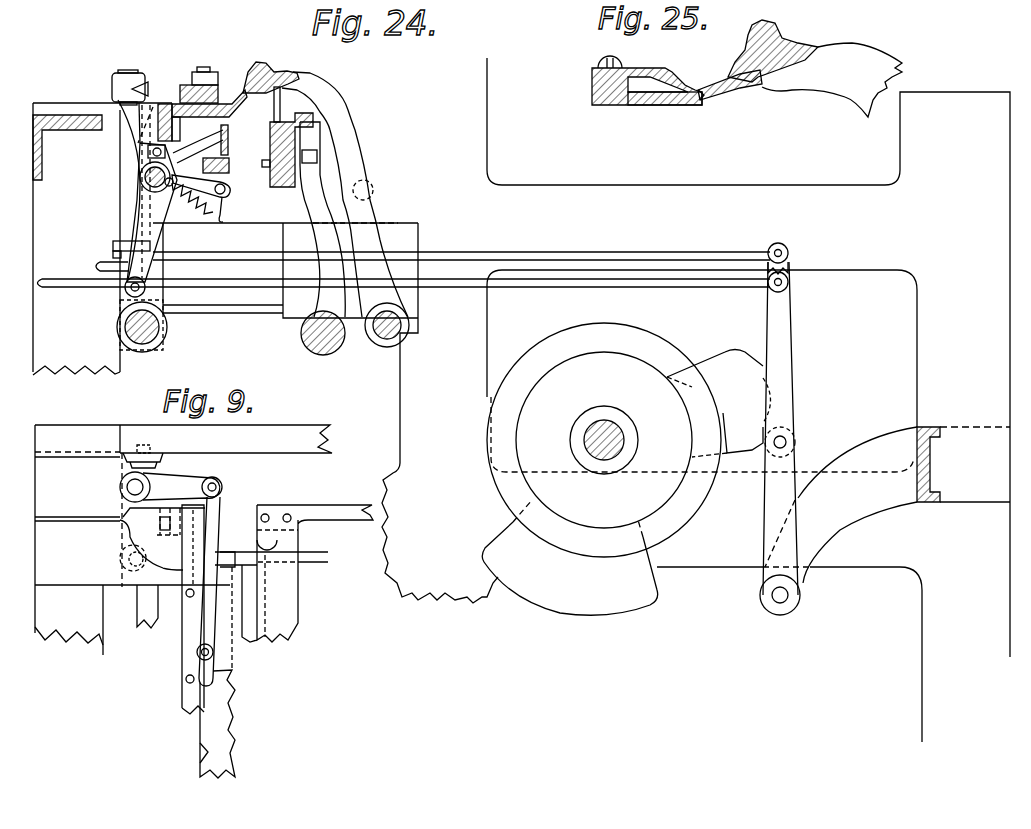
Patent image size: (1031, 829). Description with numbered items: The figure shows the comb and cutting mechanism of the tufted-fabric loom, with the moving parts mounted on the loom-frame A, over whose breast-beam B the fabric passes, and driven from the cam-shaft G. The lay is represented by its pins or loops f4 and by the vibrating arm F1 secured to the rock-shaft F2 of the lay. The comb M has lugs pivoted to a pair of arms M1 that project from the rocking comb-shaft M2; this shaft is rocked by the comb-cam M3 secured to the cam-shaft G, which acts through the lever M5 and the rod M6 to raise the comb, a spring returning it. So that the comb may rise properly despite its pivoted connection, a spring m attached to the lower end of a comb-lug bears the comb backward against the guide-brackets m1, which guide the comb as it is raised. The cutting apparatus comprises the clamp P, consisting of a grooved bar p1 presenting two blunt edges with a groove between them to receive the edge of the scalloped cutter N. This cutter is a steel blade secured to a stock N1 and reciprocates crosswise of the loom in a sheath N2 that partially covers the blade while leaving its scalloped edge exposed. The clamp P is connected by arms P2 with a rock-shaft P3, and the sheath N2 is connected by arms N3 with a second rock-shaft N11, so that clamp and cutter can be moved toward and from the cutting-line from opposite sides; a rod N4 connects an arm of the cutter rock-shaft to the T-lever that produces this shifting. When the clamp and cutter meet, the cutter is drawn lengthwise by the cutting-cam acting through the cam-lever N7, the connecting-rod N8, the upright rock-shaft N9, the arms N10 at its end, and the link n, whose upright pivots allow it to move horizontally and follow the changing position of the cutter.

In FIG. 24, the loom-frame A is at (581, 400).
In FIG. 24, the breast-beam B is at (34, 150).
In FIG. 9, the breast-beam B is at (183, 540).
In FIG. 24, the cam-shaft G is at (622, 441).
In FIG. 24, the comb M is at (230, 143).
In FIG. 24, the arms M1 is at (178, 192).
In FIG. 24, the rocking comb-shaft M2 is at (119, 184).
In FIG. 24, the comb-cam M3 is at (540, 587).
In FIG. 24, the lever M5 is at (786, 376).
In FIG. 24, the rod M6 is at (200, 288).
In FIG. 24, the spring m is at (192, 203).
In FIG. 24, the guide-brackets m1 is at (198, 146).
In FIG. 24, the scalloped cutter N is at (180, 174).
In FIG. 25, the scalloped cutter N is at (665, 107).
In FIG. 9, the scalloped cutter N is at (214, 601).
In FIG. 25, the stock N1 is at (647, 95).
In FIG. 9, the stock N1 is at (200, 727).
In FIG. 24, the sheath N2 is at (180, 84).
In FIG. 25, the sheath N2 is at (643, 62).
In FIG. 9, the sheath N2 is at (168, 650).
In FIG. 24, the arms N3 is at (158, 284).
In FIG. 24, the rod N4 is at (719, 404).
In FIG. 24, the cam-lever N7 is at (792, 256).
In FIG. 24, the connecting-rod N8 is at (545, 247).
In FIG. 9, the connecting-rod N8 is at (325, 553).
In FIG. 24, the upright rock-shaft N9 is at (125, 68).
In FIG. 9, the upright rock-shaft N9 is at (120, 488).
In FIG. 24, the arms N10 is at (82, 271).
In FIG. 9, the arms N10 is at (114, 543).
In FIG. 24, the second rock-shaft N11 is at (168, 327).
In FIG. 24, the link n is at (209, 79).
In FIG. 9, the link n is at (220, 512).
In FIG. 24, the clamp P is at (239, 93).
In FIG. 25, the clamp P is at (730, 97).
In FIG. 24, the arms P2 is at (350, 114).
In FIG. 25, the arms P2 is at (815, 68).
In FIG. 24, the rock-shaft P3 is at (404, 326).
In FIG. 25, the grooved bar p1 is at (703, 89).
In FIG. 24, the vibrating arm F1 is at (303, 206).
In FIG. 24, the rock-shaft of the lay F2 is at (263, 339).
In FIG. 24, the pins or loops f4 is at (268, 90).